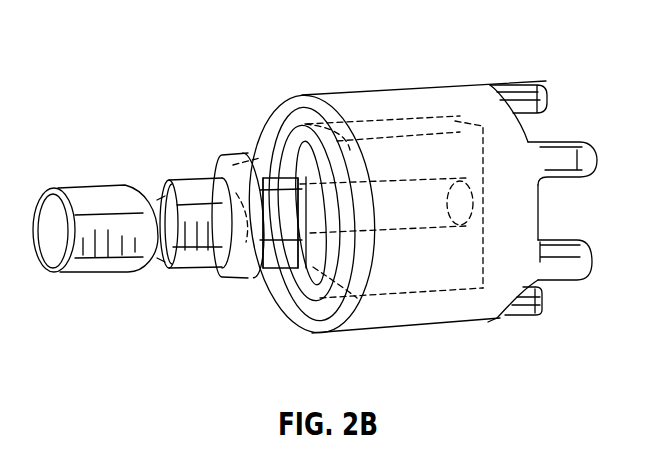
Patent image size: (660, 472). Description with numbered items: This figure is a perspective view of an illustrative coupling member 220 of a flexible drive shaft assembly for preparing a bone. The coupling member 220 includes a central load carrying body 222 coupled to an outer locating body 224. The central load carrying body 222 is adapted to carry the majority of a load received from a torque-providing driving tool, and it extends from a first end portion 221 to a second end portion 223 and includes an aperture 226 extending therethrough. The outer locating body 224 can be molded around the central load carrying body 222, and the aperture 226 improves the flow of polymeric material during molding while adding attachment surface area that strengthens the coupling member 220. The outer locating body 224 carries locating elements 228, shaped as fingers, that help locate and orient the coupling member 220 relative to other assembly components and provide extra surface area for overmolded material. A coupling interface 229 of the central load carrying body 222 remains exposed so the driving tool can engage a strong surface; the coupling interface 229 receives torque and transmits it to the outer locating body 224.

The coupling member 220 is at (113, 242).
The first end portion 221 is at (257, 282).
The central load carrying body 222 is at (440, 147).
The second end portion 223 is at (492, 234).
The outer locating body 224 is at (400, 307).
The aperture 226 is at (407, 233).
The locating elements 228 is at (530, 84).
The coupling interface 229 is at (272, 288).